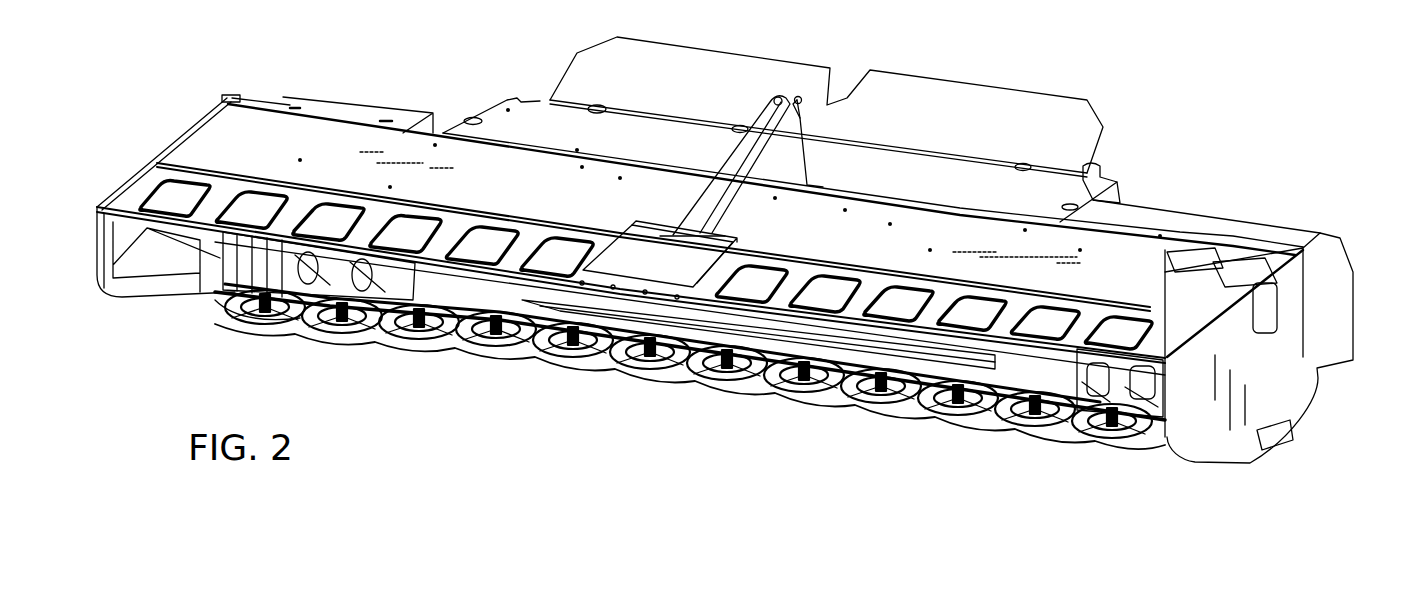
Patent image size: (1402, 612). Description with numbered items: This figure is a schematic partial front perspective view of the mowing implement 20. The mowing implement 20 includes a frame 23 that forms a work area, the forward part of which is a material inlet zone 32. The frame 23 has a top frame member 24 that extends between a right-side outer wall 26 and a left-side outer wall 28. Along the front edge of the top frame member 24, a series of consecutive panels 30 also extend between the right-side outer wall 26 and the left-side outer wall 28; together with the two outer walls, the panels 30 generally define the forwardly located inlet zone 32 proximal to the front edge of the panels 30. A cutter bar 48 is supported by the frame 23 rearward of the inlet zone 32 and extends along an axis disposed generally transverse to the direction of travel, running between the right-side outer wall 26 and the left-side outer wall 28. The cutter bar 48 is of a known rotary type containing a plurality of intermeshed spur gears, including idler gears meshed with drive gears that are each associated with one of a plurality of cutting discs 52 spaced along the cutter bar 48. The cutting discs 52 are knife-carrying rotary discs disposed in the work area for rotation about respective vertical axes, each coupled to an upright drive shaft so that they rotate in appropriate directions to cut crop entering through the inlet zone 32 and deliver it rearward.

The mowing implement 20 is at (1232, 148).
The frame 23 is at (251, 99).
The top frame member 24 is at (322, 143).
The right-side outer wall 26 is at (147, 290).
The left-side outer wall 28 is at (1293, 398).
The panels 30 is at (185, 200).
The inlet zone 32 is at (640, 400).
The cutter bar 48 is at (583, 398).
The cutting discs 52 is at (268, 308).